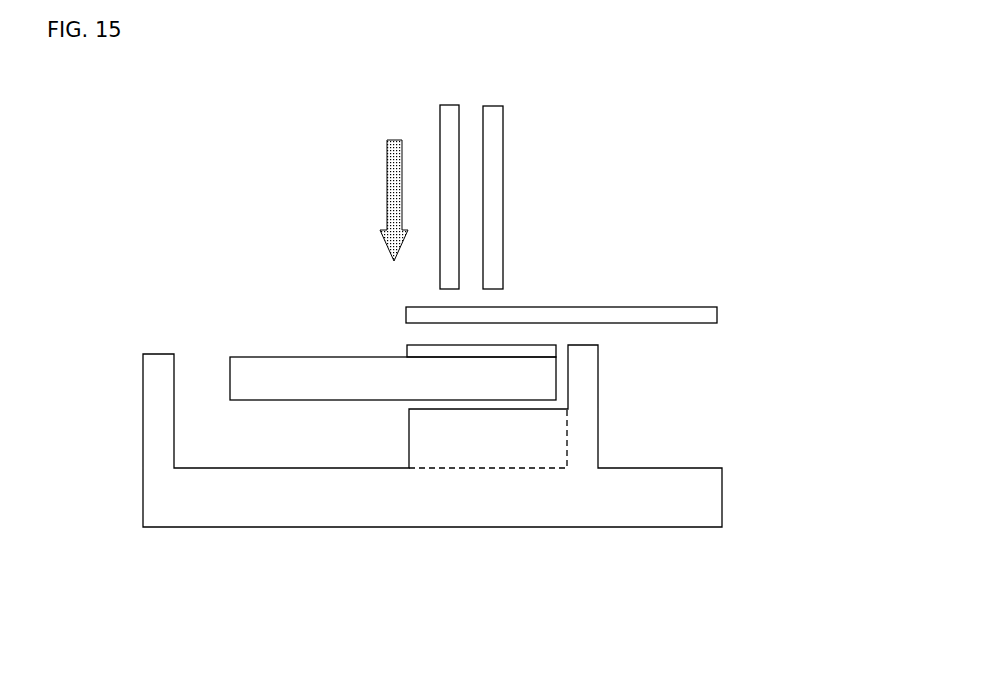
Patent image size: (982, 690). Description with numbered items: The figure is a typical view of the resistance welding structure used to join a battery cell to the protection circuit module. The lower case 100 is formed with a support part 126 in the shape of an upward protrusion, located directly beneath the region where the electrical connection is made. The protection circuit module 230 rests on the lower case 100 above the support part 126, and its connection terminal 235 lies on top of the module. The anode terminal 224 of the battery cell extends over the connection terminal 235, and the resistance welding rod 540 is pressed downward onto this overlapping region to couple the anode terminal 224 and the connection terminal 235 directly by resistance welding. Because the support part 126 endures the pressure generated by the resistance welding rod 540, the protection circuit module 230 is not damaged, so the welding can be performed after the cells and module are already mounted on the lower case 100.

The lower case 100 is at (132, 449).
The support part 126 is at (495, 453).
The anode terminal 224 is at (690, 318).
The protection circuit module 230 is at (257, 373).
The connection terminal 235 is at (415, 357).
The resistance welding rod 540 is at (524, 157).